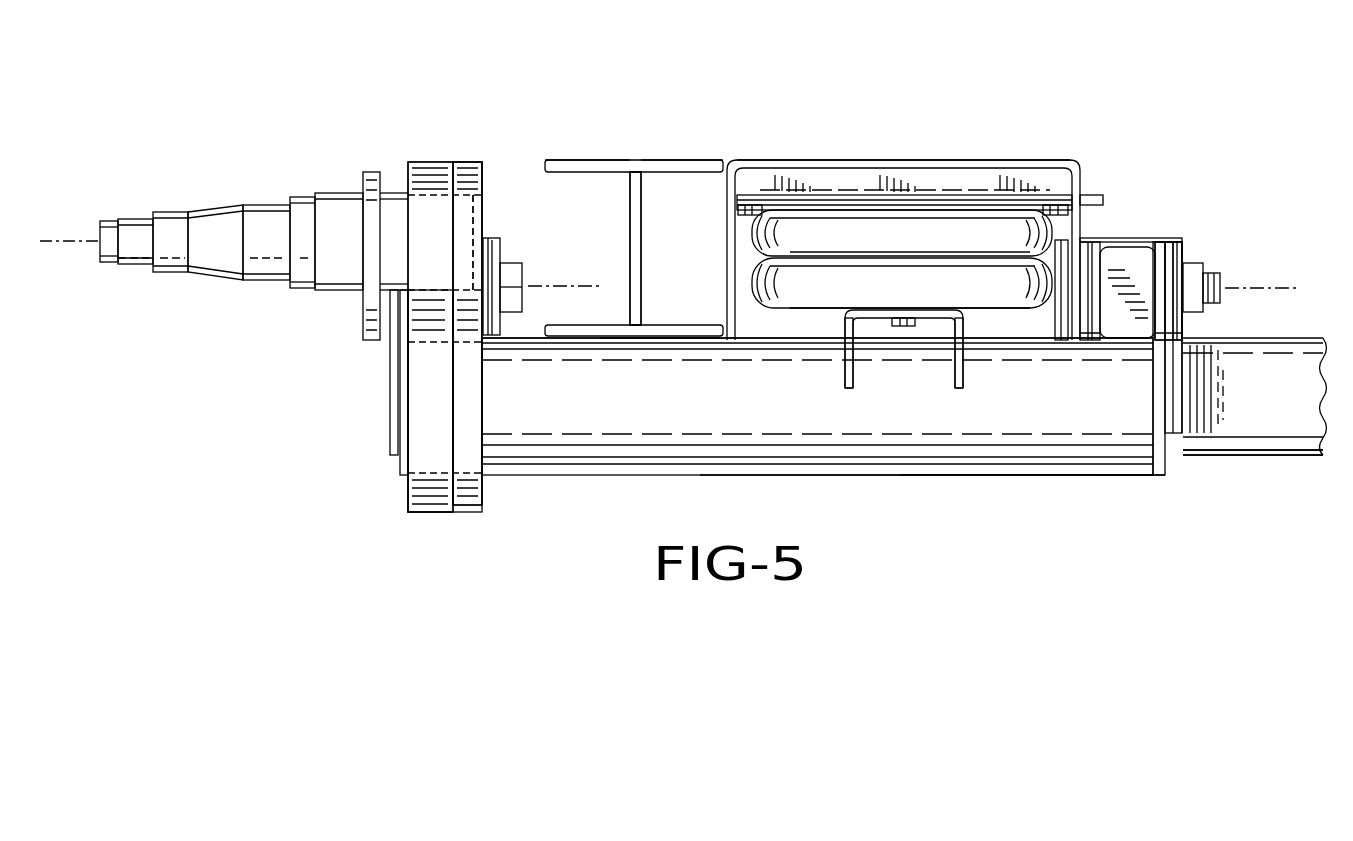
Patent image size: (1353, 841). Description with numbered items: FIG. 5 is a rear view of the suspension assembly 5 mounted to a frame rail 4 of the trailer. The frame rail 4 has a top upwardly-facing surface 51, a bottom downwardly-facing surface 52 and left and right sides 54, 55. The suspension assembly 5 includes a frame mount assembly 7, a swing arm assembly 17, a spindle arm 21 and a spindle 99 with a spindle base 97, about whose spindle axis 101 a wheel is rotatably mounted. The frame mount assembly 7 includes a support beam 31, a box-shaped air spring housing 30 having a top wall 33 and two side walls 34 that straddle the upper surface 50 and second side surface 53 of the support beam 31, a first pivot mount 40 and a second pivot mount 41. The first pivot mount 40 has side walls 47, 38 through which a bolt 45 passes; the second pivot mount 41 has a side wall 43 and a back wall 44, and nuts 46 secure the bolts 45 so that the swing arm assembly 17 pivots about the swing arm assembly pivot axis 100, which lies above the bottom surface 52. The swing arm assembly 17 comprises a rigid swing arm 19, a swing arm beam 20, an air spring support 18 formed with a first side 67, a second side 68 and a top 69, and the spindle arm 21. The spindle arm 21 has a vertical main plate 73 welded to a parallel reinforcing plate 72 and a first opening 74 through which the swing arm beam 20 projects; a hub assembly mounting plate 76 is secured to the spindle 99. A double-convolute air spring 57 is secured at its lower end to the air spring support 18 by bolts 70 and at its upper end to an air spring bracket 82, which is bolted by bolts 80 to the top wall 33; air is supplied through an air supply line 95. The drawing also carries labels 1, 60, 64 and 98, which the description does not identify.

The suspension system 1 is at (1054, 60).
The frame rail 4 is at (624, 157).
The suspension assembly 5 is at (1052, 554).
The frame mount assembly 7 is at (1286, 467).
The swing arm assembly 17 is at (894, 490).
The air spring support 18 is at (838, 356).
The swing arm 19 is at (1179, 230).
The swing arm beam 20 is at (553, 463).
The spindle arm 21 is at (404, 490).
The air spring housing 30 is at (910, 155).
The support beam 31 is at (1206, 478).
The top wall 33 is at (887, 160).
The side wall 34 is at (727, 243).
The second side wall 38 is at (500, 250).
The first pivot mount 40 is at (498, 235).
The second pivot mount 41 is at (1202, 241).
The side wall 43 is at (1180, 325).
The back wall 44 is at (1141, 236).
The bolt 45 is at (518, 300).
The nut 46 is at (1192, 265).
The first side wall 47 is at (390, 318).
The upper surface 50 is at (691, 338).
The top upwardly-facing surface 51 is at (655, 161).
The bottom downwardly facing surface 52 is at (660, 339).
The second side surface 53 is at (1245, 433).
The left side 54 is at (545, 166).
The right side 55 is at (722, 165).
The air spring 57 is at (942, 230).
The frame hanger 60 is at (1165, 398).
The elastomeric bushing 64 is at (1125, 325).
The first side 67 is at (843, 378).
The second side 68 is at (963, 370).
The top 69 is at (880, 300).
The bolt 70 is at (900, 326).
The reinforcing plate 72 is at (470, 407).
The vertical main plate 73 is at (425, 423).
The first opening 74 is at (398, 360).
The hub assembly mounting plate 76 is at (370, 185).
The bolt 80 is at (757, 206).
The air spring bracket 82 is at (834, 182).
The air supply line 95 is at (1098, 197).
The spindle base 97 is at (432, 213).
The bore 98 is at (482, 215).
The spindle 99 is at (208, 205).
The swing arm assembly pivot axis 100 is at (545, 285).
The spindle axis 101 is at (50, 245).